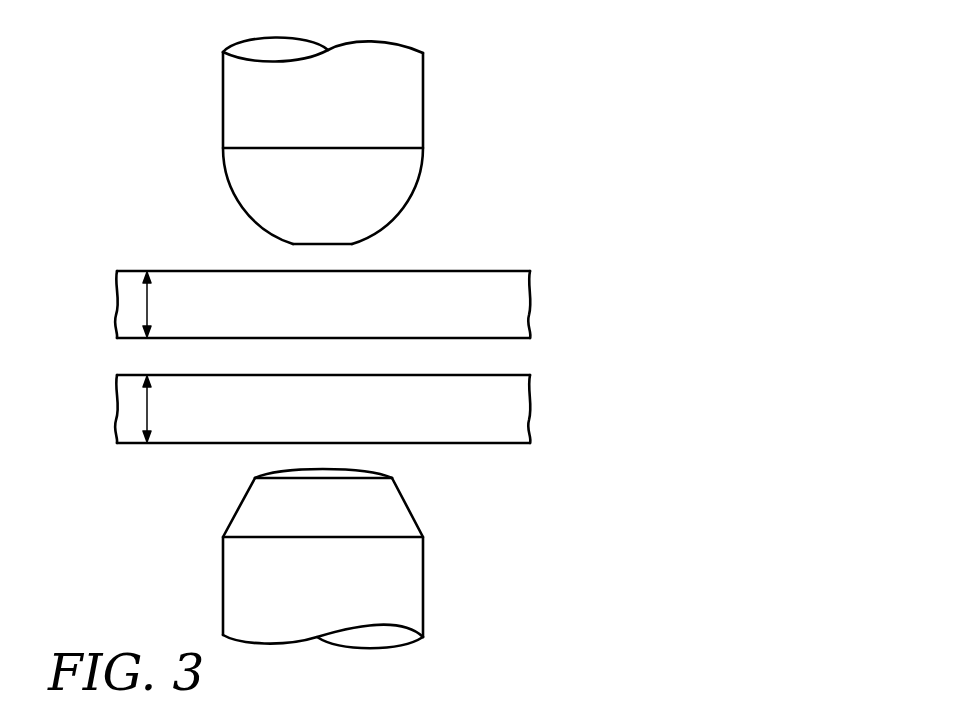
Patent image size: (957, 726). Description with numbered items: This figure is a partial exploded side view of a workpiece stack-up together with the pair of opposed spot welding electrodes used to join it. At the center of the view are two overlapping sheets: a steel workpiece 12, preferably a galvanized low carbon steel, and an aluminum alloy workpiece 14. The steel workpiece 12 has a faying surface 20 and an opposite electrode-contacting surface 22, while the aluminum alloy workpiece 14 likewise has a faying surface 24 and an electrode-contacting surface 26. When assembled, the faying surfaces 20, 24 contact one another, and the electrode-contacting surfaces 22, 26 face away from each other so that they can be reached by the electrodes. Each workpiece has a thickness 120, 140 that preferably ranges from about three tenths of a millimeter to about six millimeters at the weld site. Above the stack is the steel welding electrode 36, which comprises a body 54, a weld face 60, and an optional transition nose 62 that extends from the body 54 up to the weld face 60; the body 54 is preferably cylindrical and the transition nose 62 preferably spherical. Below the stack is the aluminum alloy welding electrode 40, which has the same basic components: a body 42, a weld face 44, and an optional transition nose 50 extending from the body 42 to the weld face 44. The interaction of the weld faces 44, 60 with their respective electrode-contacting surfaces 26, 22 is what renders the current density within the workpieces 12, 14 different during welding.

The steel workpiece 12 is at (332, 289).
The aluminum alloy workpiece 14 is at (322, 425).
The faying surface 20 is at (517, 338).
The electrode-contacting surface 22 is at (483, 270).
The faying surface 24 is at (470, 374).
The electrode-contacting surface 26 is at (472, 443).
The steel welding electrode 36 is at (333, 149).
The aluminum alloy welding electrode 40 is at (332, 551).
The body 42 is at (245, 584).
The weld face 44 is at (285, 473).
The transition nose 50 is at (388, 507).
The body 54 is at (238, 112).
The weld face 60 is at (338, 245).
The transition nose 62 is at (260, 183).
The thickness 120 is at (147, 304).
The thickness 140 is at (147, 408).